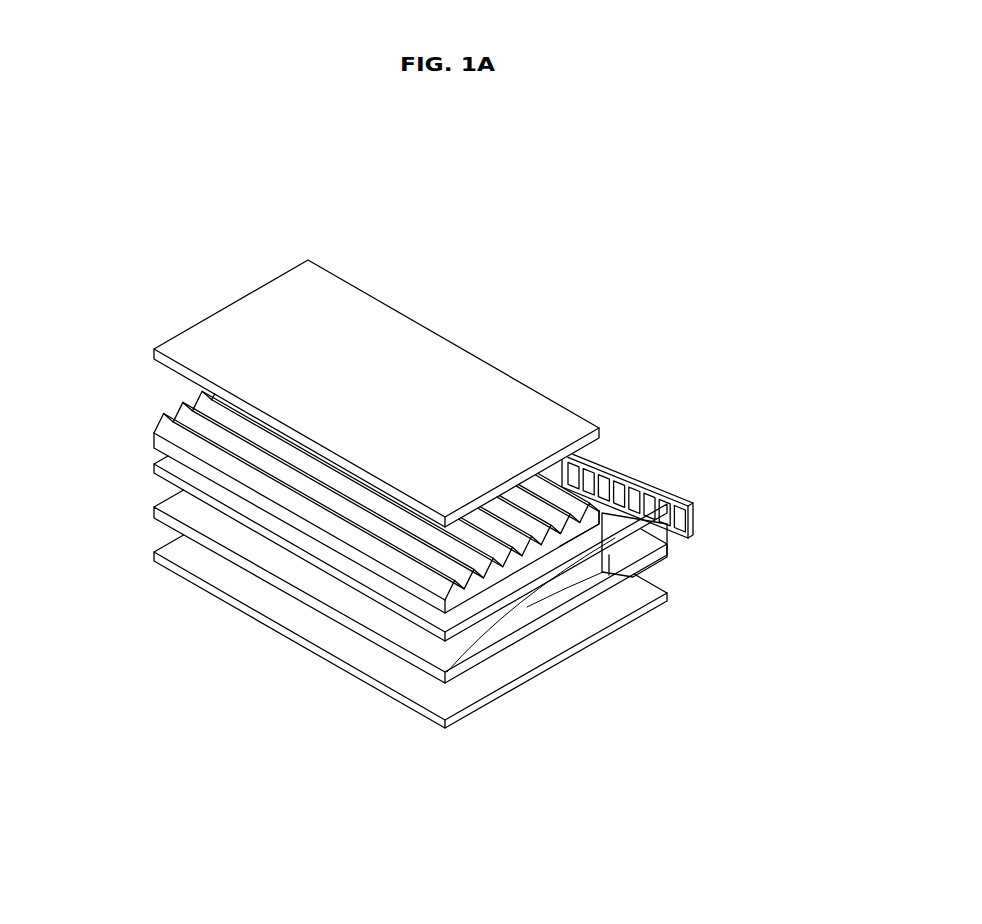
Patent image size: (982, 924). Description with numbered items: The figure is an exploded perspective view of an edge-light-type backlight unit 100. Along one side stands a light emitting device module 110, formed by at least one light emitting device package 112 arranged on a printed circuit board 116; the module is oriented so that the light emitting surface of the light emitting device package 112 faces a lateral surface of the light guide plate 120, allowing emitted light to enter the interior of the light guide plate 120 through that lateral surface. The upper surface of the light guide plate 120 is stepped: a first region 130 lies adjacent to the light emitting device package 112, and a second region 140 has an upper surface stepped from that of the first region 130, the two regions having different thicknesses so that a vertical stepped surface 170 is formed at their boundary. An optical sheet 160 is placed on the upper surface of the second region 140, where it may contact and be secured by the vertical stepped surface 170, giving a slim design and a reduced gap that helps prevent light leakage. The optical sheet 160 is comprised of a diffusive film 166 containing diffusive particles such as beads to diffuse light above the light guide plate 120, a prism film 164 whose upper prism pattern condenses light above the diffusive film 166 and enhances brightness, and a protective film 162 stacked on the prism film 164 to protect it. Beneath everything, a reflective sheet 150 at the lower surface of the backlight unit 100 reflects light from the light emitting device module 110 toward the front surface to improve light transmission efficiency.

The backlight unit 100 is at (86, 173).
The light emitting device module 110 is at (793, 472).
The light emitting device package 112 is at (685, 515).
The printed circuit board 116 is at (685, 500).
The light guide plate 120 is at (652, 552).
The first region 130 is at (638, 545).
The second region 140 is at (523, 607).
The reflective sheet 150 is at (645, 595).
The optical sheet 160 is at (713, 390).
The protective film 162 is at (548, 410).
The prism film 164 is at (565, 490).
The diffusive film 166 is at (643, 485).
The vertical stepped surface 170 is at (633, 578).